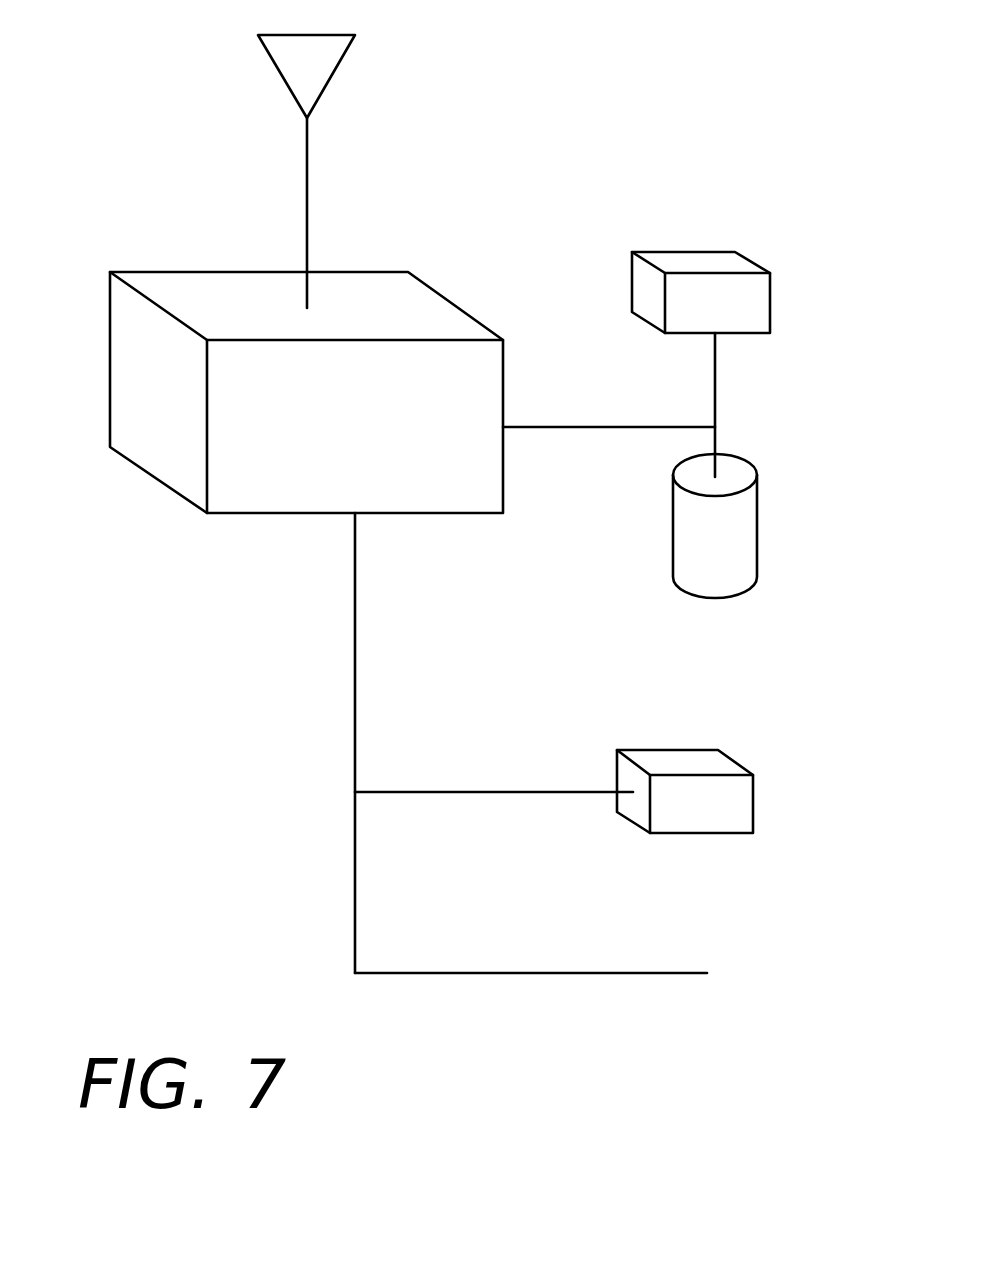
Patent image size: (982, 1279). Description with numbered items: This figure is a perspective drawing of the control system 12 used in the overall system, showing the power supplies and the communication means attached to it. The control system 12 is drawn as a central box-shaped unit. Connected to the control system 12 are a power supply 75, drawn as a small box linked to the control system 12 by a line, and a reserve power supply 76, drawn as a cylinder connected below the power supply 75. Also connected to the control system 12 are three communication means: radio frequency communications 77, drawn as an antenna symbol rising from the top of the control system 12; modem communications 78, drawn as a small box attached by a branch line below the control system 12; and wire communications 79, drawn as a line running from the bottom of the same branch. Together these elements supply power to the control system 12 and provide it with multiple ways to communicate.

The control system 12 is at (147, 475).
The radio frequency communications 77 is at (273, 63).
The power supply 75 is at (770, 312).
The reserve power supply 76 is at (760, 533).
The modem communications 78 is at (753, 810).
The wire communications 79 is at (707, 973).